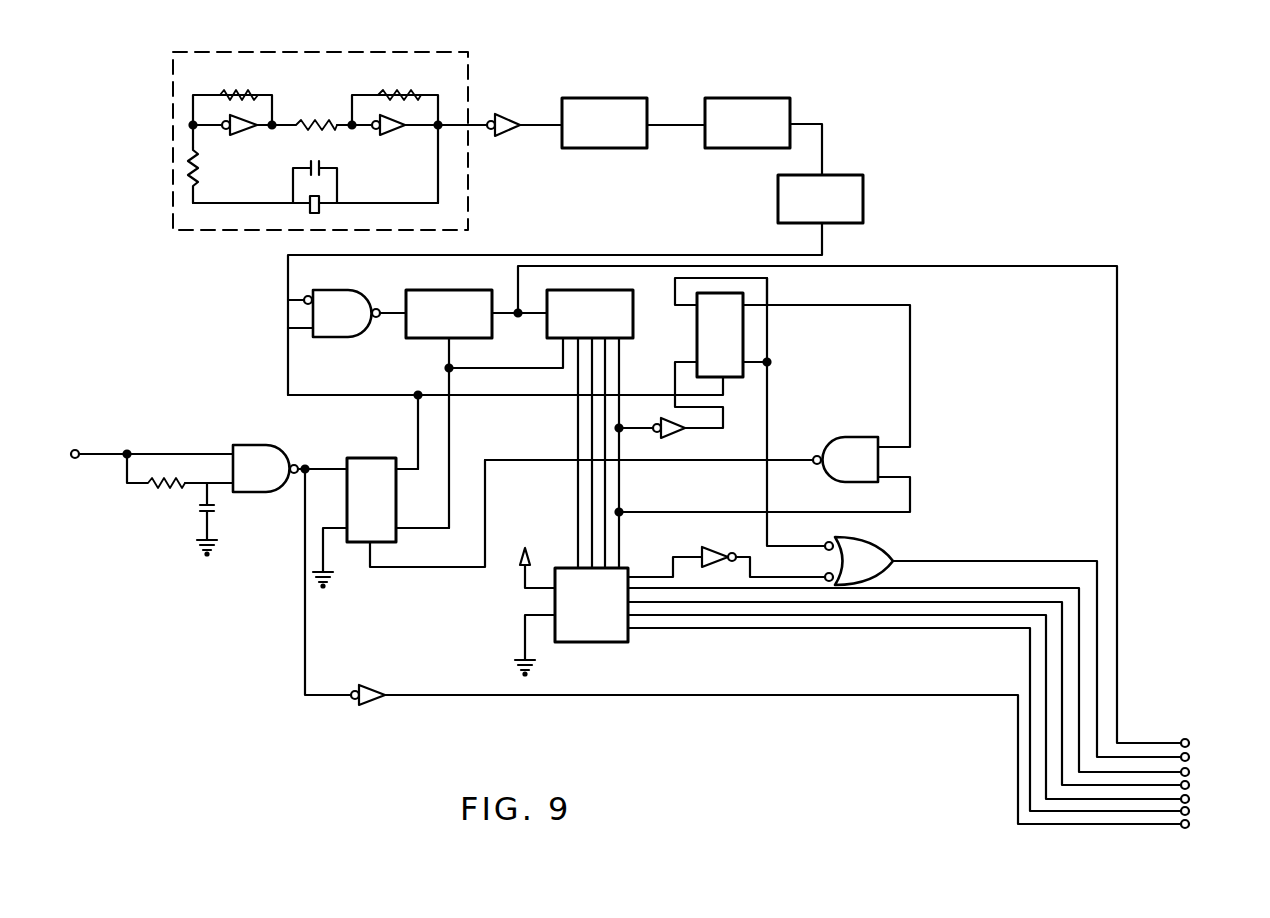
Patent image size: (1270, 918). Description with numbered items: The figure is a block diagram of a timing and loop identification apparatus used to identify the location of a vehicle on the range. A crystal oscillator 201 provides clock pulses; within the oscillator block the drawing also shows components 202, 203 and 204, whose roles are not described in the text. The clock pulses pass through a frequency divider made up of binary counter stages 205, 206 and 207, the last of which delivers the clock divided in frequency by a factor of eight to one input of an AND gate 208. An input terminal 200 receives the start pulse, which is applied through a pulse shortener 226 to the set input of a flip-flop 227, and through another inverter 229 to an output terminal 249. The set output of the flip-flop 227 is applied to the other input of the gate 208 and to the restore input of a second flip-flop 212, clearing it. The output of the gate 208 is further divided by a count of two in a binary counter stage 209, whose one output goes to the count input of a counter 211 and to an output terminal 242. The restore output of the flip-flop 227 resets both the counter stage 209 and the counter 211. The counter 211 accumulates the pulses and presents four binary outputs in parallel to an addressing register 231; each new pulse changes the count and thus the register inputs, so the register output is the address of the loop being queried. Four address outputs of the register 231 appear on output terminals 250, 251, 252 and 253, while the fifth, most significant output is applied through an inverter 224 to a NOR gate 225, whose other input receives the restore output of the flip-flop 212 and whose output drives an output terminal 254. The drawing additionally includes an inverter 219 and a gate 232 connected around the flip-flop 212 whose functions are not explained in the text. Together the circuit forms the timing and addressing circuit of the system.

The input terminal 200 is at (78, 451).
The crystal oscillator 201 is at (172, 181).
The crystal 202 is at (320, 199).
The inverter 203 is at (249, 132).
The inverter 204 is at (399, 132).
The binary counter stage 205 is at (645, 107).
The binary counter stage 206 is at (793, 107).
The binary counter stage 207 is at (869, 185).
The AND gate 208 is at (367, 300).
The binary counter stage 209 is at (475, 300).
The counter 211 is at (596, 298).
The flip-flop 212 is at (697, 323).
The inverter 219 is at (678, 431).
The inverter 224 is at (703, 553).
The NOR gate 225 is at (876, 553).
The pulse shortener 226 is at (273, 450).
The flip-flop 227 is at (361, 467).
The inverter 229 is at (376, 692).
The addressing register 231 is at (620, 636).
The AND gate 232 is at (838, 445).
The output terminal 242 is at (1189, 745).
The output terminal 249 is at (1181, 828).
The output terminal 250 is at (1189, 814).
The output terminal 251 is at (1189, 800).
The output terminal 252 is at (1189, 786).
The output terminal 253 is at (1189, 773).
The output terminal 254 is at (1189, 758).